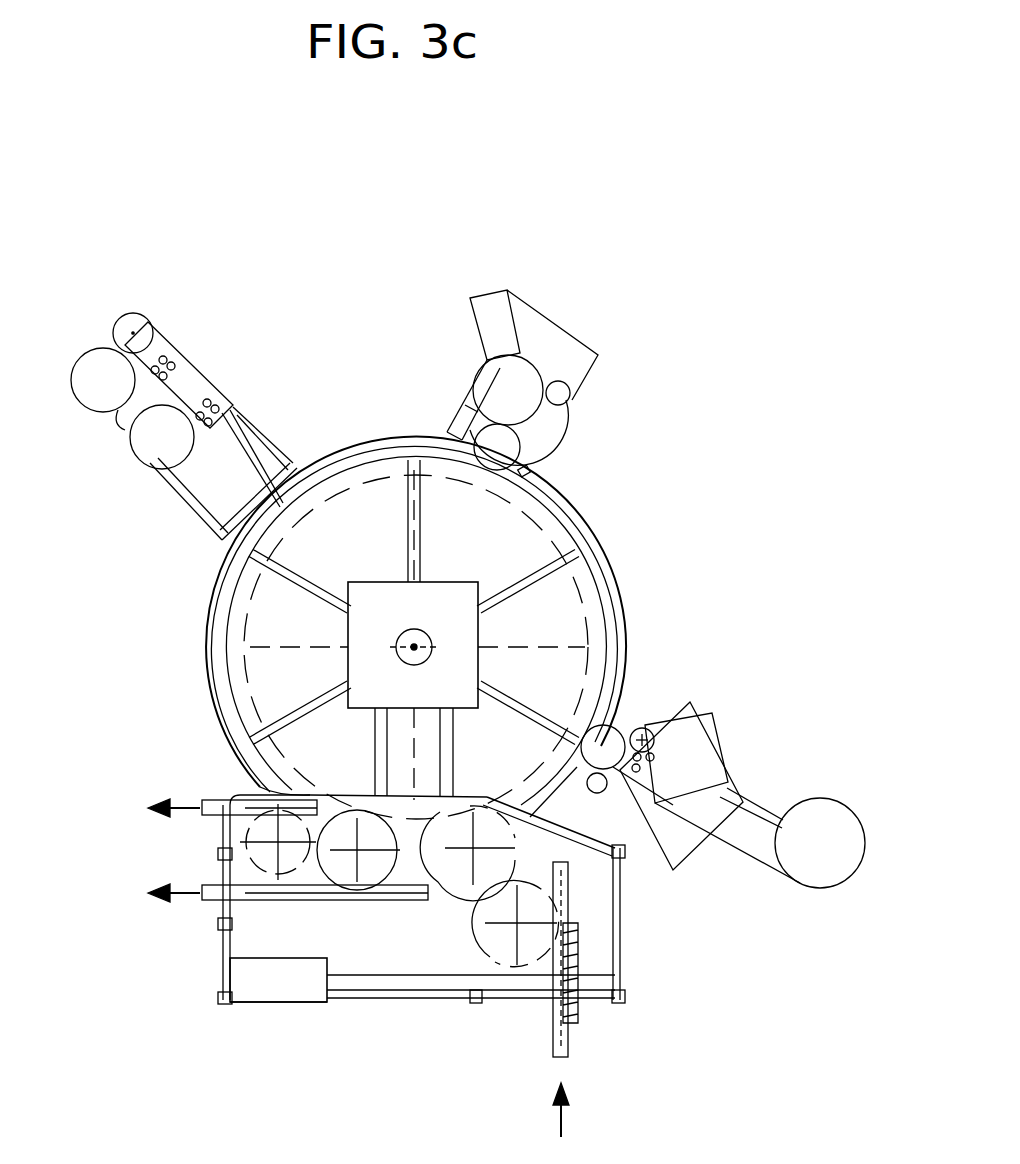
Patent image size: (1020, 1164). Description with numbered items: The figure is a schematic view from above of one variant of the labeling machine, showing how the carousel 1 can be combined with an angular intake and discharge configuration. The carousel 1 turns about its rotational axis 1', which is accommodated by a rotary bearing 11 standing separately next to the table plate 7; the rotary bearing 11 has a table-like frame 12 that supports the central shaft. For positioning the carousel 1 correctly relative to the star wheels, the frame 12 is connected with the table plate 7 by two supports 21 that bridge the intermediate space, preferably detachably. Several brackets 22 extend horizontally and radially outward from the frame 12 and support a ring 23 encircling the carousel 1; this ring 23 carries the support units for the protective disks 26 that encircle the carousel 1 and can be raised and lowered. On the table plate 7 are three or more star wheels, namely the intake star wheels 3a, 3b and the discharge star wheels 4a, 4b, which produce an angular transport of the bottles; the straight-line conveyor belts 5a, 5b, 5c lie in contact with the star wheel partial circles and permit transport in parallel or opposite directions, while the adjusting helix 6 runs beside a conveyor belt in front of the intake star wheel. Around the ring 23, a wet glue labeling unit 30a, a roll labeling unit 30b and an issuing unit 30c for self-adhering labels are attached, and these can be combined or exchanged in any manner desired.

The carousel 1 is at (507, 644).
The rotational axis 1' is at (261, 617).
The intake star wheel 3a is at (490, 957).
The intake star wheel 3b is at (455, 887).
The discharge star wheel 4a is at (400, 850).
The discharge star wheel 4b is at (245, 835).
The conveyor belt 5a is at (561, 1057).
The conveyor belt 5b is at (252, 900).
The conveyor belt 5c is at (212, 802).
The adjusting helix 6 is at (580, 940).
The table plate 7 is at (298, 935).
The rotary bearing 11 is at (400, 635).
The frame 12 is at (363, 667).
The support 21 is at (447, 757).
The bracket 22 is at (413, 496).
The ring 23 is at (607, 650).
The protective disk 26 is at (573, 512).
The wet glue labeling unit 30a is at (585, 285).
The roll labeling unit 30b is at (765, 730).
The issuing unit 30c is at (88, 285).